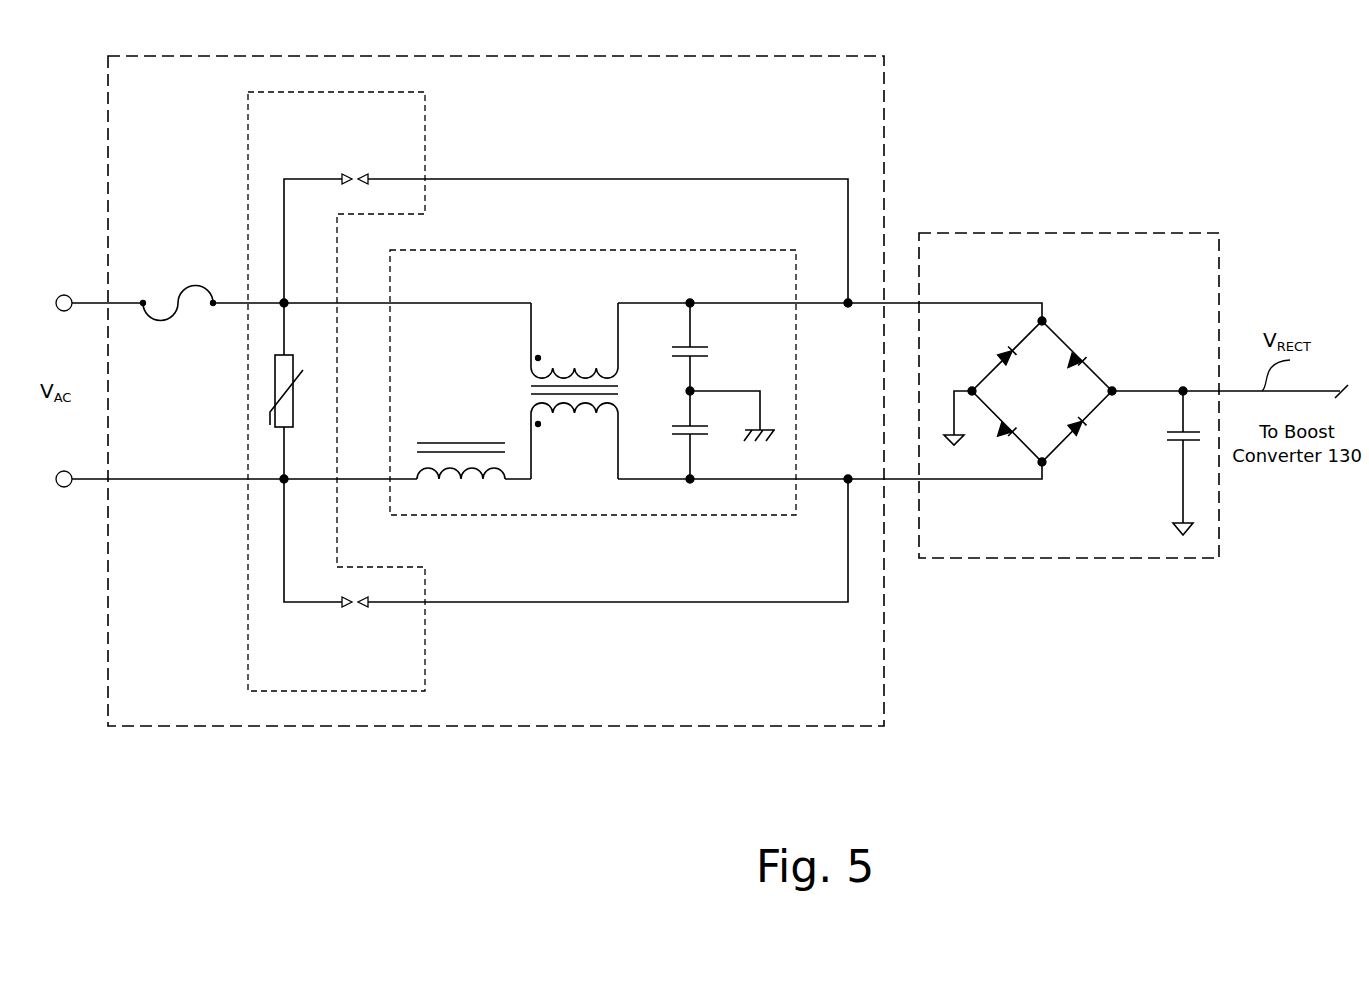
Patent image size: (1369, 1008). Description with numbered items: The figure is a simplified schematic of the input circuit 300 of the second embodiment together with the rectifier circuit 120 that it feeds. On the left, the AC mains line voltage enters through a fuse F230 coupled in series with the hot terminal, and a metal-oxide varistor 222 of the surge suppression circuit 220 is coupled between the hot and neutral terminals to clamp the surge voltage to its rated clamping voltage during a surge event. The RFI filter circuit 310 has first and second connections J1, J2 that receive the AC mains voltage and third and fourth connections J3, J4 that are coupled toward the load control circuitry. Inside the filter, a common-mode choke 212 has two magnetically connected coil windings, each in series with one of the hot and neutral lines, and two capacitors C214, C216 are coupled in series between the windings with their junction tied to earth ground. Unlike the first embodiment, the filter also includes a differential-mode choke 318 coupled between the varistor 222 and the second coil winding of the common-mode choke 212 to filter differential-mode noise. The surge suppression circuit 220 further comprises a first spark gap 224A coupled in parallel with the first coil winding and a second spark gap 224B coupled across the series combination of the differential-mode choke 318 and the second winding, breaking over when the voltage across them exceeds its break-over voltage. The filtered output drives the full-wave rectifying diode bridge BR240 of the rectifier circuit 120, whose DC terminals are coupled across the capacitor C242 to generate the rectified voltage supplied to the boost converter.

The input circuit 300 is at (558, 726).
The surge suppression circuit 220 is at (425, 162).
The first spark gap 224A is at (361, 154).
The second spark gap 224B is at (358, 629).
The fuse F230 is at (185, 312).
The metal-oxide varistor 222 is at (283, 405).
The RFI filter circuit 310 is at (708, 515).
The differential-mode choke 318 is at (486, 417).
The common-mode choke 212 is at (574, 308).
The capacitor C214 is at (702, 360).
The capacitor C216 is at (678, 425).
The first connection J1 is at (364, 303).
The second connection J2 is at (362, 483).
The third connection J3 is at (822, 303).
The fourth connection J4 is at (820, 482).
The rectifier circuit 120 is at (1043, 558).
The full-wave rectifying diode bridge BR240 is at (1098, 331).
The capacitor C242 is at (1175, 445).